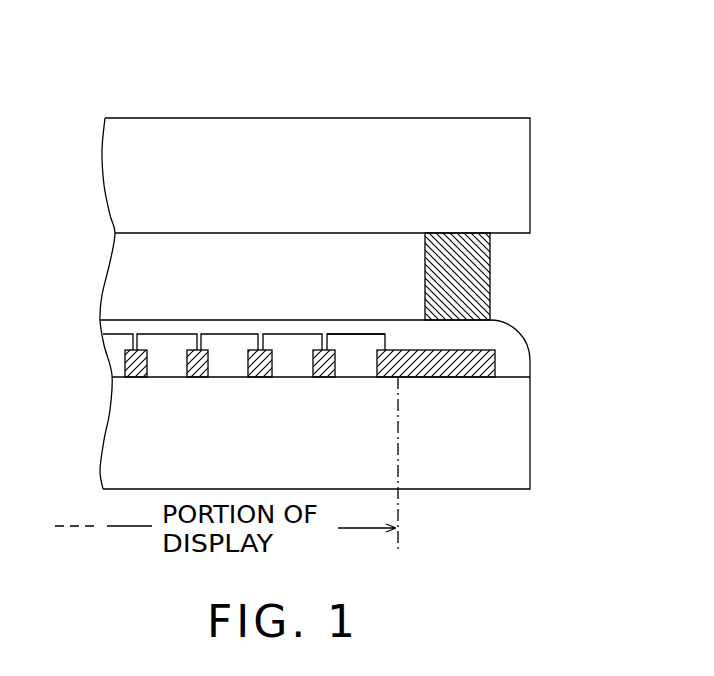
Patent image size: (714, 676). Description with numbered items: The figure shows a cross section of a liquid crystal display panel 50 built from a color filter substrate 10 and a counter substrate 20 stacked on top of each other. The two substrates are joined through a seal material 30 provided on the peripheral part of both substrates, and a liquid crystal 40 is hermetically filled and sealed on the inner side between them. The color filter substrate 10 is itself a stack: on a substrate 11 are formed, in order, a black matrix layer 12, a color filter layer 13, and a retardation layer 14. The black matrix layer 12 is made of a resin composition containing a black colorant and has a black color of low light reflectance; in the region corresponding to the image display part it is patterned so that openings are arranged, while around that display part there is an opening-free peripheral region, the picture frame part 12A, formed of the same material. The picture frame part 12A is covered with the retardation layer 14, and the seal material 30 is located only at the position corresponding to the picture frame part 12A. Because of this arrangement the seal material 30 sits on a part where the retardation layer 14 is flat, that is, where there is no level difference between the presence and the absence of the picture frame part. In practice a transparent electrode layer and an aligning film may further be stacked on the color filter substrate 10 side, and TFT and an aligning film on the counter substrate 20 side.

The liquid crystal display panel 50 is at (320, 100).
The counter substrate 20 is at (97, 118).
The liquid crystal 40 is at (135, 255).
The seal material 30 is at (470, 272).
The color filter substrate 10 is at (97, 320).
The substrate 11 is at (515, 420).
The black matrix layer 12 is at (322, 379).
The picture frame part 12A is at (490, 365).
The color filter layer 13 is at (350, 347).
The retardation layer 14 is at (155, 328).